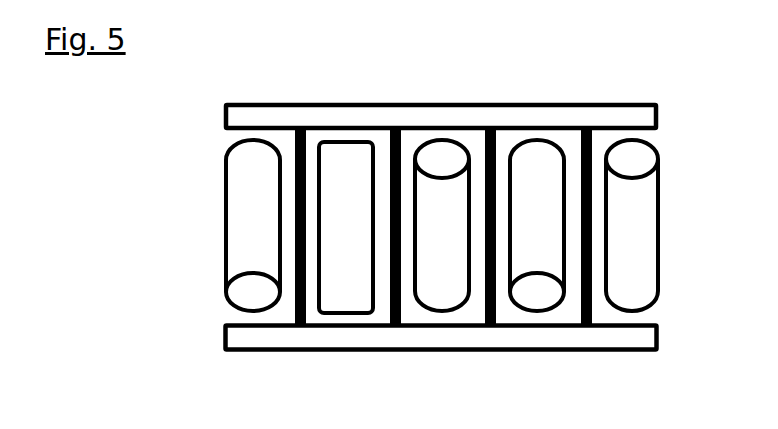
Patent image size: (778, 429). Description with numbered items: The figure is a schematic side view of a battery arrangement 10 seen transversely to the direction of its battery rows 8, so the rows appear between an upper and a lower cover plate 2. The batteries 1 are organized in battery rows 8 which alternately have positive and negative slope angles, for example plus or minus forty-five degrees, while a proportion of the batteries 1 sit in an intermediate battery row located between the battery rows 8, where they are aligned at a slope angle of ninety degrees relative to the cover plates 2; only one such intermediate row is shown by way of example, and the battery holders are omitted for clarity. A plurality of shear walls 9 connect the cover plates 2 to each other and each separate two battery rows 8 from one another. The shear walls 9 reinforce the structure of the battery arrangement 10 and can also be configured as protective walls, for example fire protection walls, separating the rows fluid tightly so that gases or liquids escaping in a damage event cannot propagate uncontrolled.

The battery 1 is at (245, 243).
The cover plate 2 is at (655, 103).
The battery row 8 is at (256, 320).
The shear wall 9 is at (308, 145).
The battery arrangement 10 is at (270, 50).